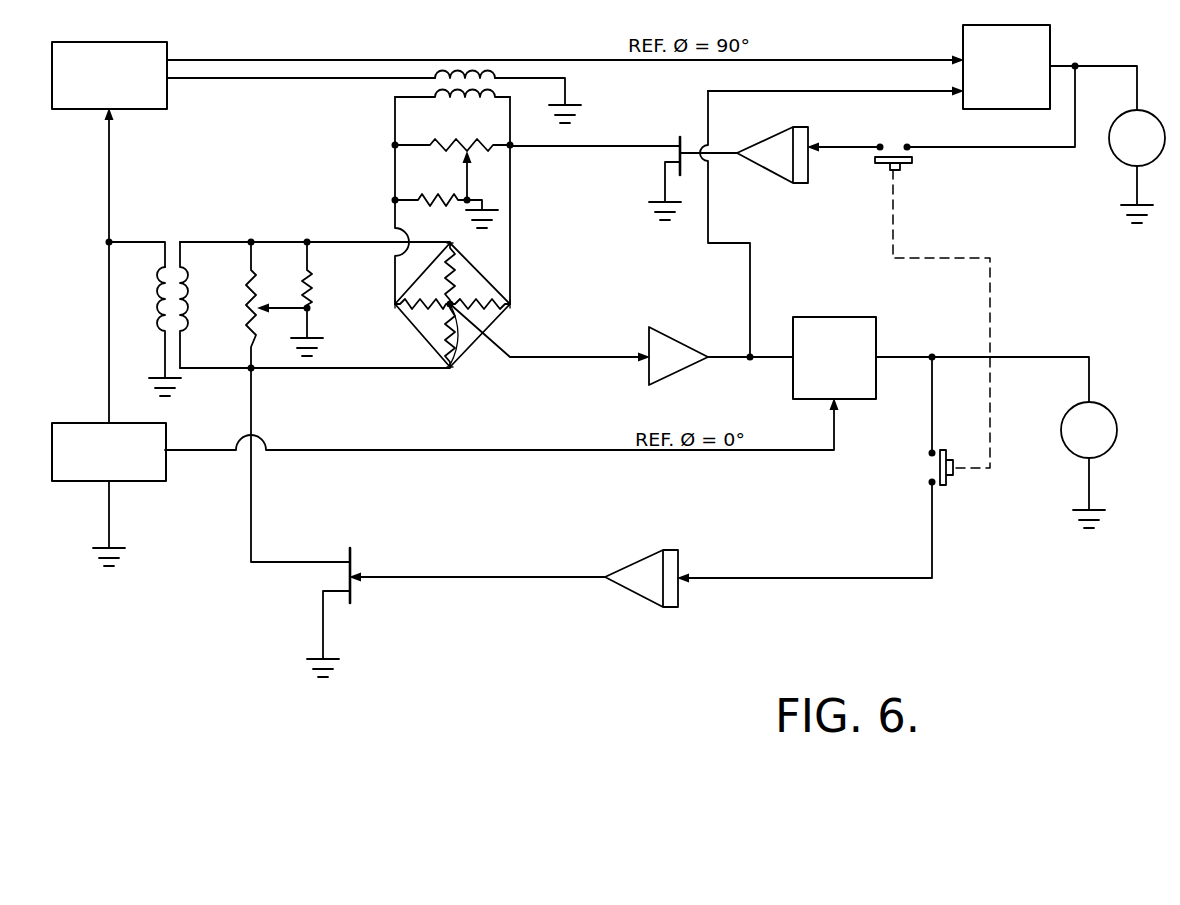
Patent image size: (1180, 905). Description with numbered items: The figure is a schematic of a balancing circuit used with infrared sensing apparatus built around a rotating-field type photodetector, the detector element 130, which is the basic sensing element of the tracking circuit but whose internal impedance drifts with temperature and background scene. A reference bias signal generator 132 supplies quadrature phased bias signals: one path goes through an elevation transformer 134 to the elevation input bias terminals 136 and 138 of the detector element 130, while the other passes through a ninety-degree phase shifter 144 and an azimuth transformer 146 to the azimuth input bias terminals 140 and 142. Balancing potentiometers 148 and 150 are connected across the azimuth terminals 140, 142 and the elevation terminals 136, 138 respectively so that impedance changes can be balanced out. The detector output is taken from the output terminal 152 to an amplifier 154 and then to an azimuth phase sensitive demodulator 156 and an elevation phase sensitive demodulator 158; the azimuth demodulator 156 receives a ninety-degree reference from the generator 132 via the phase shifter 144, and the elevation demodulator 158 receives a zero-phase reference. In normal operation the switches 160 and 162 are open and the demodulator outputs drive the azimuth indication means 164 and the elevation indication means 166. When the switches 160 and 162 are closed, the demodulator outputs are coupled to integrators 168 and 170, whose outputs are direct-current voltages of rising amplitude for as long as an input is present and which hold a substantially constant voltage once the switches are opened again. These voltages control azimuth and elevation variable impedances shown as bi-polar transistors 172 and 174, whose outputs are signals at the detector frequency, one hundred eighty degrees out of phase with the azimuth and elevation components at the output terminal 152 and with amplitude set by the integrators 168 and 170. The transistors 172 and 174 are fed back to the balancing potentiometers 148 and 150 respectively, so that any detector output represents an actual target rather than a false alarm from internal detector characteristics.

The detector element 130 is at (454, 319).
The reference bias signal generator 132 is at (68, 425).
The elevation transformer 134 is at (170, 246).
The elevation input bias terminal 136 is at (456, 243).
The elevation input bias terminal 138 is at (458, 368).
The azimuth input bias terminal 140 is at (394, 303).
The azimuth input bias terminal 142 is at (511, 305).
The 90° phase shifter 144 is at (150, 52).
The azimuth transformer 146 is at (425, 82).
The balancing potentiometer 148 is at (472, 153).
The balancing potentiometer 150 is at (255, 303).
The output terminal 152 is at (444, 369).
The amplifier 154 is at (676, 349).
The azimuth phase sensitive demodulator 156 is at (972, 43).
The elevation phase sensitive demodulator 158 is at (820, 326).
The switch 160 is at (912, 152).
The switch 162 is at (935, 462).
The azimuth indication means 164 is at (1125, 152).
The elevation indication means 166 is at (1098, 440).
The integrator 168 is at (772, 162).
The integrator 170 is at (670, 552).
The bi-polar transistor 172 is at (679, 136).
The bi-polar transistor 174 is at (352, 562).